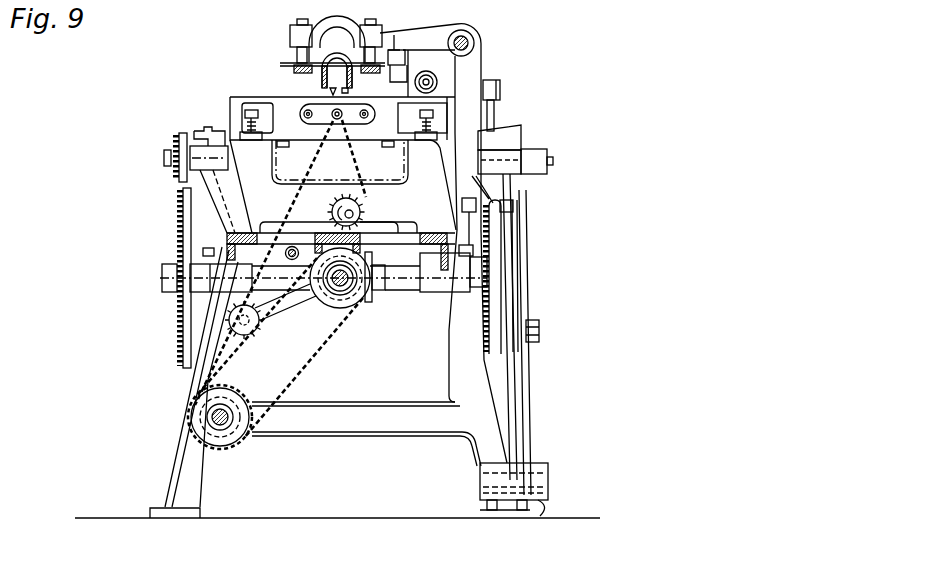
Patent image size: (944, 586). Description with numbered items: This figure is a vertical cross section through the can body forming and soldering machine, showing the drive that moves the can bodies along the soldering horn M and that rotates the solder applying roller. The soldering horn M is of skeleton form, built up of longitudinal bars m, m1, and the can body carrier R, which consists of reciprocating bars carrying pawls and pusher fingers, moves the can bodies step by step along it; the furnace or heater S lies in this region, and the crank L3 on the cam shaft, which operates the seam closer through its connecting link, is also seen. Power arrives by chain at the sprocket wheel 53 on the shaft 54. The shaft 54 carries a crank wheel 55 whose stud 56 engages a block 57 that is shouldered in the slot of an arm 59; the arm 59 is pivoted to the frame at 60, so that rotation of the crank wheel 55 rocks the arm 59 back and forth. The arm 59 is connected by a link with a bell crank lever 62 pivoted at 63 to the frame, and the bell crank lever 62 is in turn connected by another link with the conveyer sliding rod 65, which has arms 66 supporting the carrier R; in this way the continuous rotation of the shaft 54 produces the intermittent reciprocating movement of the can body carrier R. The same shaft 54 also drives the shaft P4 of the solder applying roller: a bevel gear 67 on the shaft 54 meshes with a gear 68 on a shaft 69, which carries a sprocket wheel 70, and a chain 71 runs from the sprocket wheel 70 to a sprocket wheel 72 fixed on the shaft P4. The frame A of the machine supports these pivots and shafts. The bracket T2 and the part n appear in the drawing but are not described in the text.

The sprocket wheel 53 is at (177, 202).
The shaft 54 is at (407, 288).
The crank wheel 55 is at (494, 268).
The stud 56 is at (541, 332).
The block 57 is at (530, 320).
The arm 59 is at (528, 374).
The pivot 60 is at (550, 480).
The bell crank lever 62 is at (497, 128).
The pivot 63 is at (553, 161).
The conveyer sliding rod 65 is at (472, 42).
The arms 66 is at (407, 31).
The bevel gear 67 is at (378, 292).
The gear 68 is at (353, 309).
The shaft 69 is at (280, 262).
The sprocket wheel 70 is at (270, 311).
The chain 71 is at (301, 370).
The sprocket wheel 72 is at (237, 438).
The frame A is at (521, 143).
The furnace or heater S is at (340, 185).
The soldering horn M is at (337, 64).
The can body carrier R is at (294, 67).
The arch support T2 is at (352, 16).
The crank L3 is at (330, 127).
The shaft P4 is at (212, 412).
The longitudinal bar m is at (370, 74).
The longitudinal bar m1 is at (304, 74).
The bracket n is at (410, 64).